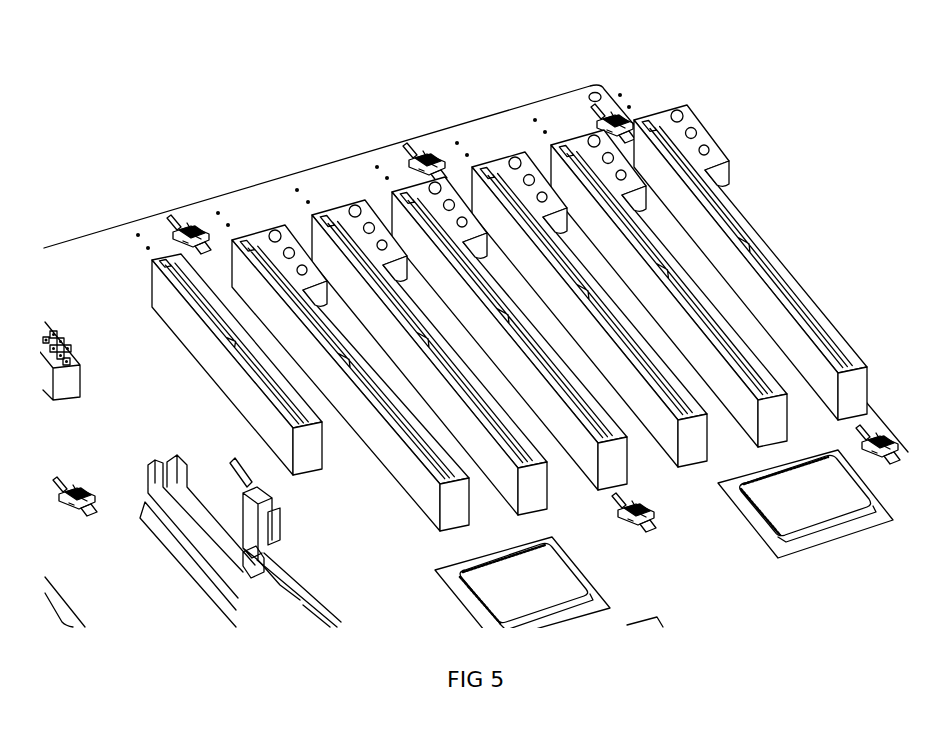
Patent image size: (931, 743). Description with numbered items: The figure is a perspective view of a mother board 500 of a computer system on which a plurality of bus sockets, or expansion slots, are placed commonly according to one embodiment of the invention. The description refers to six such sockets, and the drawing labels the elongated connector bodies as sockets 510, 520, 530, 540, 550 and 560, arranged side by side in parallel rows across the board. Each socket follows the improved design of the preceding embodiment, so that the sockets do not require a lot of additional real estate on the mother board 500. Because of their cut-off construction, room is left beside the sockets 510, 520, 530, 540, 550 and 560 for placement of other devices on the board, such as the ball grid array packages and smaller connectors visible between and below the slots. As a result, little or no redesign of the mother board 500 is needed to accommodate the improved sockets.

The circuit board assembly 500 is at (368, 46).
The memory module connector 510 is at (770, 243).
The memory module connector 520 is at (785, 427).
The memory module connector 530 is at (507, 155).
The memory module connector 540 is at (628, 470).
The memory module connector 550 is at (549, 482).
The memory module connector 560 is at (434, 516).